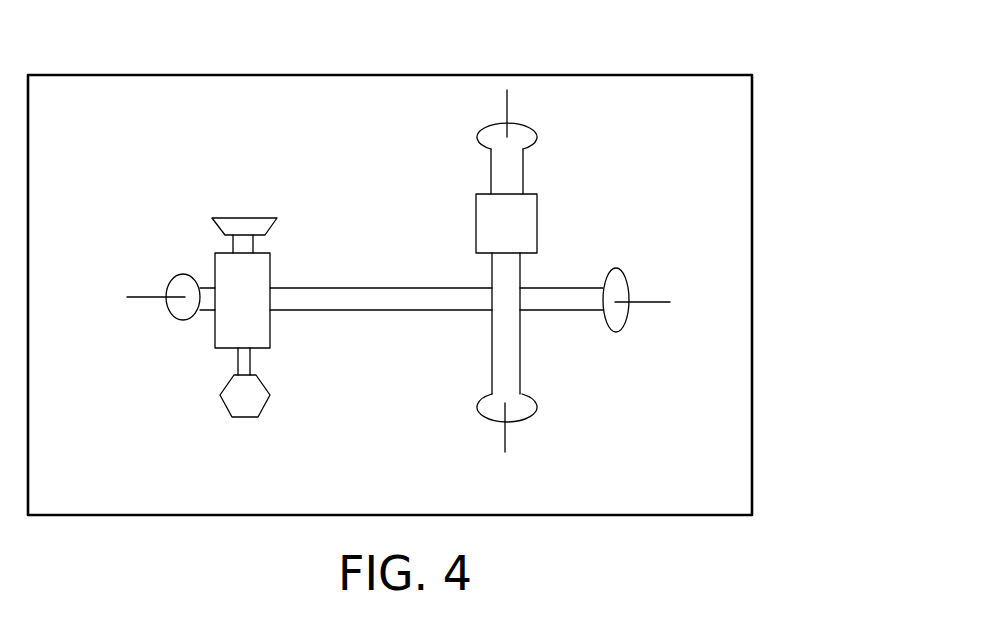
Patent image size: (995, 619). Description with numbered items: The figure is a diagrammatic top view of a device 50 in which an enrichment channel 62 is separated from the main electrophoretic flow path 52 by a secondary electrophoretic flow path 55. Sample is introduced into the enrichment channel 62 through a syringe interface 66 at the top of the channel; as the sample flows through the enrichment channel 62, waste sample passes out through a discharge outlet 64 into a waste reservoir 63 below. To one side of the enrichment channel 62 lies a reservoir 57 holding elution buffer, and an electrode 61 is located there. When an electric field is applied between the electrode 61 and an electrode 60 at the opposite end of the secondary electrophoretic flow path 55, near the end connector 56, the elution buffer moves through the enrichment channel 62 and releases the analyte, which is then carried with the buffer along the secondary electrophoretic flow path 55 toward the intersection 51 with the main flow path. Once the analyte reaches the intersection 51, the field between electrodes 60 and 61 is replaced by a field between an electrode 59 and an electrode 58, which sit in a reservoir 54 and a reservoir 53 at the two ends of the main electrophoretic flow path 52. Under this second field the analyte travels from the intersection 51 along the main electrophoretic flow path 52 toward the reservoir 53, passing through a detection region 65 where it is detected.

The device 50 is at (694, 50).
The intersection 51 is at (518, 312).
The main electrophoretic flow path 52 is at (520, 263).
The reservoir 53 is at (525, 138).
The reservoir 54 is at (525, 402).
The secondary electrophoretic flow path 55 is at (424, 305).
The right end connector 56 is at (613, 322).
The reservoir 57 is at (181, 307).
The electrode 58 is at (507, 97).
The electrode 59 is at (506, 432).
The electrode 60 is at (650, 302).
The electrode 61 is at (150, 297).
The enrichment channel 62 is at (257, 310).
The waste reservoir 63 is at (259, 407).
The discharge outlet 64 is at (250, 360).
The detection region 65 is at (521, 235).
The syringe interface 66 is at (265, 232).